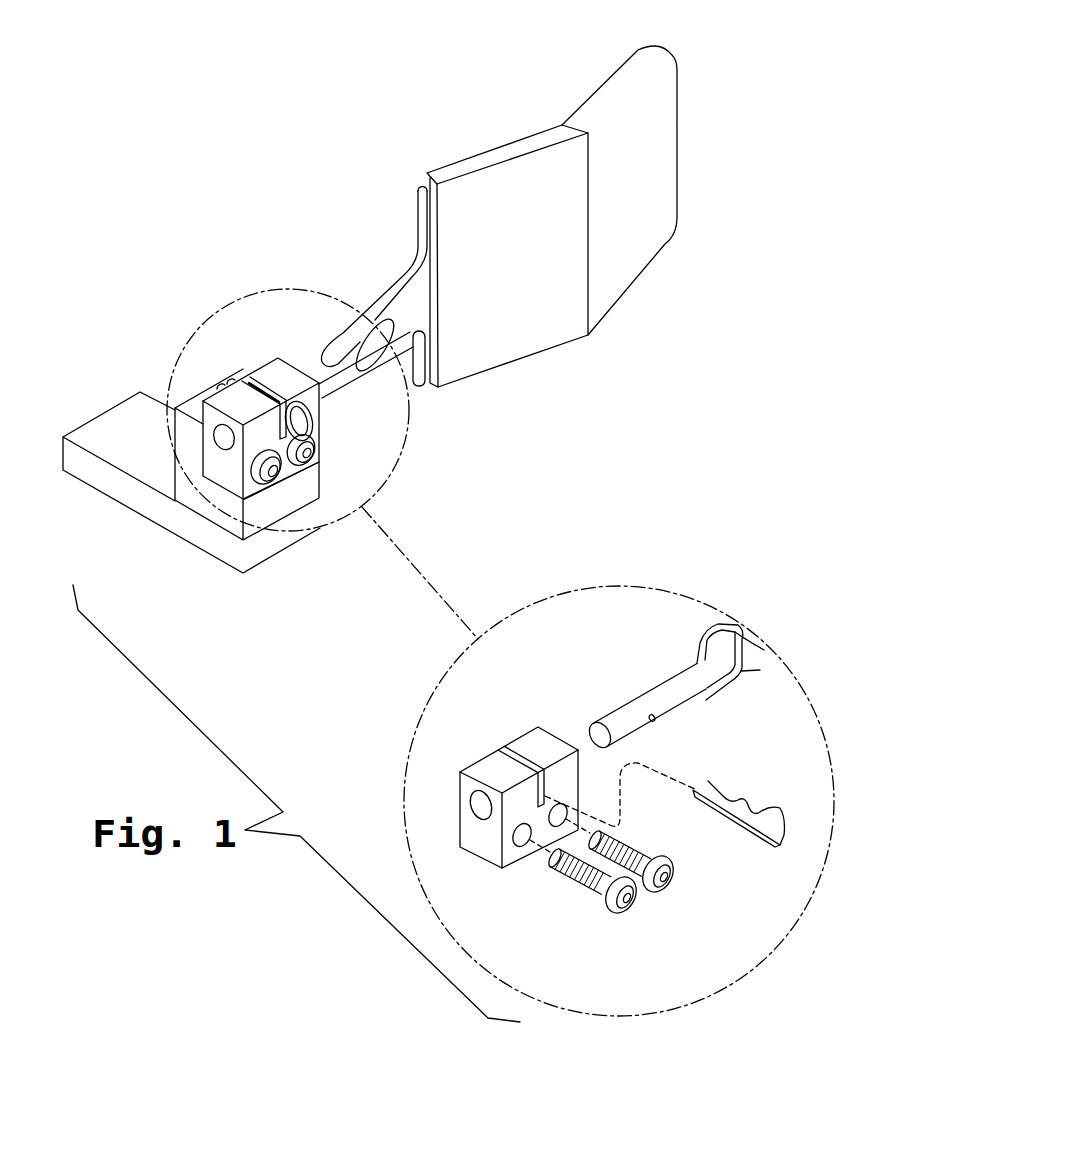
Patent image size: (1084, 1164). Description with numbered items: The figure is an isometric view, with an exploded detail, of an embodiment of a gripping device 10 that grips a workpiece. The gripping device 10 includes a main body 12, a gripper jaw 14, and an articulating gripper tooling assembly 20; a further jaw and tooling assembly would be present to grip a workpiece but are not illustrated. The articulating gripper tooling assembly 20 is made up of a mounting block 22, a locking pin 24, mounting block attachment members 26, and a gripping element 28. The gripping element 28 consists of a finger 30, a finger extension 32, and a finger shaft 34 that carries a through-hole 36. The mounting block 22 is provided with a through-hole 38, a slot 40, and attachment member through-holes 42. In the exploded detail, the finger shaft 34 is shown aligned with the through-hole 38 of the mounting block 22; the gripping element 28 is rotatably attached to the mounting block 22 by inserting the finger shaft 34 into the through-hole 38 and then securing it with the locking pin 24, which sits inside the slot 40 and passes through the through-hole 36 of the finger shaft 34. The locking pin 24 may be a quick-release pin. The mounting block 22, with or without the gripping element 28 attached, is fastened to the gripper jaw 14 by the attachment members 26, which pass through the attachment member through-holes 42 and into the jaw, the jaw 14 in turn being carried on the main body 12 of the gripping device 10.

The gripping device 10 is at (210, 198).
The main body 12 is at (138, 505).
The gripper jaw 14 is at (218, 518).
The articulating gripper tooling assembly 20 is at (348, 244).
The mounting block 22 is at (517, 803).
The locking pin 24 is at (779, 803).
The mounting block attachment members 26 is at (665, 888).
The gripping element 28 is at (583, 216).
The finger 30 is at (640, 210).
The finger extension 32 is at (716, 633).
The finger shaft 34 is at (674, 662).
The through-hole 36 is at (655, 721).
The through-hole 38 is at (481, 812).
The slot 40 is at (500, 752).
The attachment member through-holes 42 is at (562, 813).